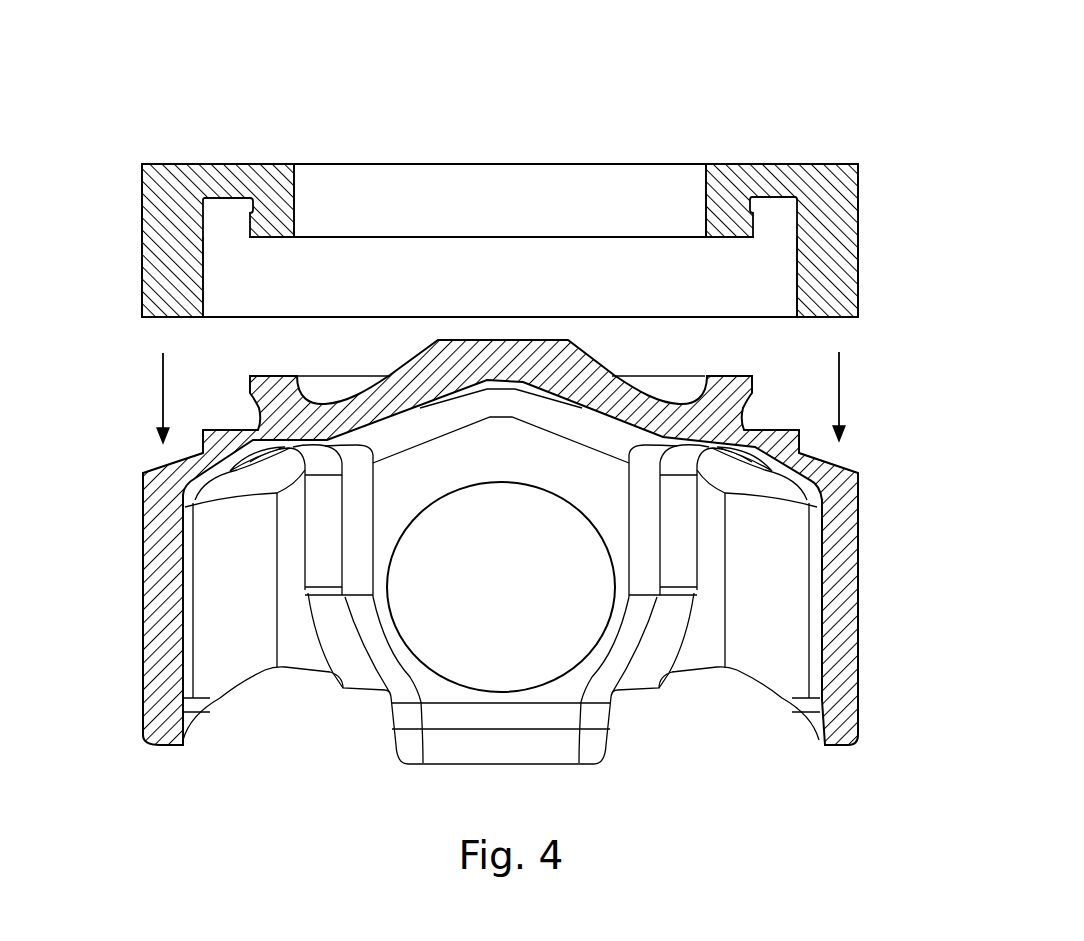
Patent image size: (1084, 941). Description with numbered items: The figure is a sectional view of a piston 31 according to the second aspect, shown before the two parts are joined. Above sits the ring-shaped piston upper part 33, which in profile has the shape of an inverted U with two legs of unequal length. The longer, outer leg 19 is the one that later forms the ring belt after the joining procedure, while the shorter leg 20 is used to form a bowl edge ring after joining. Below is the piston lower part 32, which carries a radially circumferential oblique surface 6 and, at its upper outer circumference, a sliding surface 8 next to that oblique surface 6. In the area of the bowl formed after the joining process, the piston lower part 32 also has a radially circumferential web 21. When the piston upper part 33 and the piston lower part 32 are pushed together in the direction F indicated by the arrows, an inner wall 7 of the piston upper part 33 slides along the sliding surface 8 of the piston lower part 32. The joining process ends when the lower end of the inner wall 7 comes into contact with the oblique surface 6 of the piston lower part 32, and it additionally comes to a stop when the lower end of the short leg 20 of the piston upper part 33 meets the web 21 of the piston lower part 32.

The piston 31 is at (508, 120).
The piston upper part 33 is at (160, 228).
The inner wall 7 is at (202, 268).
The short leg 20 is at (826, 190).
The outer leg 19 is at (830, 262).
The piston lower part 32 is at (165, 600).
The oblique surface 6 is at (172, 462).
The sliding surface 8 is at (803, 445).
The web 21 is at (743, 374).